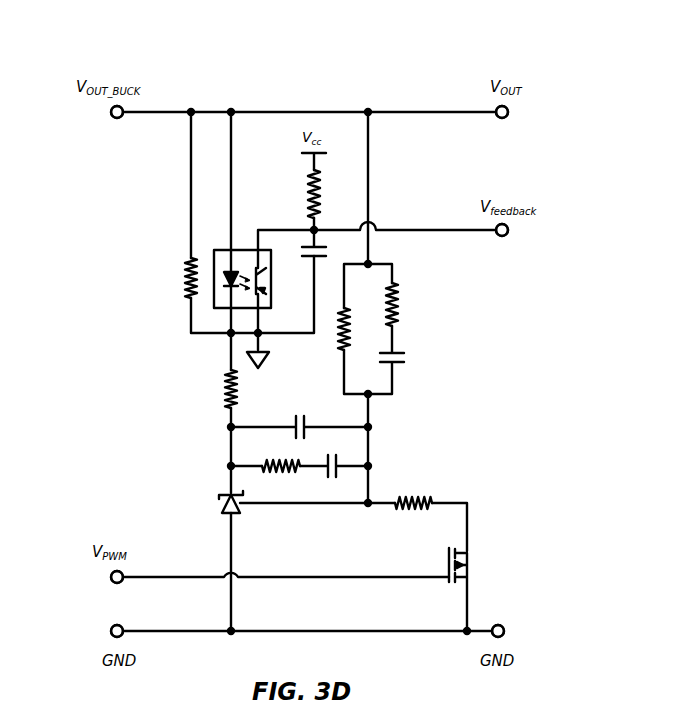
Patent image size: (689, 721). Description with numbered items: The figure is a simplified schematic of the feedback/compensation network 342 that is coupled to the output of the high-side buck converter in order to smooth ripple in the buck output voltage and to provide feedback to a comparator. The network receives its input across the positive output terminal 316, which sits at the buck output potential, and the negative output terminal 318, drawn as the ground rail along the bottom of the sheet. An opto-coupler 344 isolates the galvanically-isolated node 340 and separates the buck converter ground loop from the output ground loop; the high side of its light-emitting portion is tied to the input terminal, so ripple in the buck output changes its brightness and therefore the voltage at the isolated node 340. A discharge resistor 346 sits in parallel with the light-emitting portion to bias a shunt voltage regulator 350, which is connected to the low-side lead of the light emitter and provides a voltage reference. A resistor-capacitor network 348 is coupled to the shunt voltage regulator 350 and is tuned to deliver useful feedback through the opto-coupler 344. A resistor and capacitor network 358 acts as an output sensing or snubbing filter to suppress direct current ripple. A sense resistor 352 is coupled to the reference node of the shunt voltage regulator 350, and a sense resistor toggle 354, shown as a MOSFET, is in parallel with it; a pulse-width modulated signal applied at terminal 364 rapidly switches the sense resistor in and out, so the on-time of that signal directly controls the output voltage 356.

The feedback/compensation network 342 is at (140, 55).
The positive output terminal 316 is at (110, 112).
The output voltage 356 is at (509, 112).
The galvanically-isolated node 340 is at (509, 230).
The discharge resistor 346 is at (185, 280).
The opto-coupler 344 is at (214, 308).
The resistor and capacitor network 358 is at (402, 264).
The resistor-capacitor network 348 is at (216, 365).
The shunt voltage regulator 350 is at (225, 512).
The sense resistor 352 is at (423, 492).
The sense resistor toggle 354 is at (470, 562).
The PWM input terminal 364 is at (110, 577).
The negative output terminal 318 is at (110, 631).